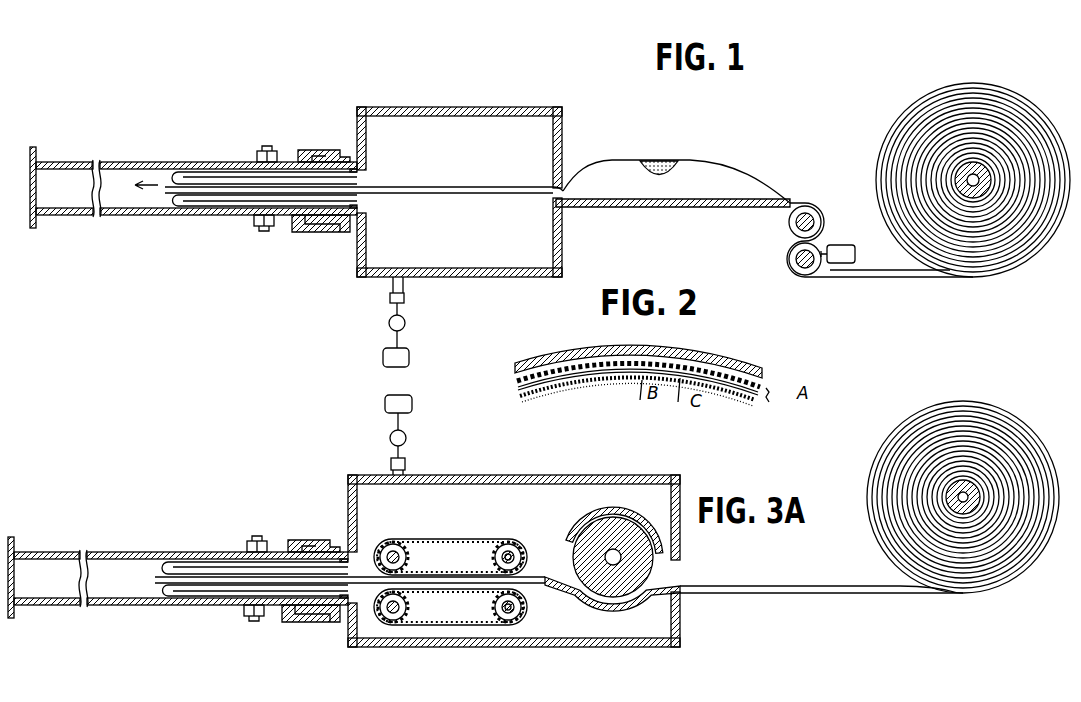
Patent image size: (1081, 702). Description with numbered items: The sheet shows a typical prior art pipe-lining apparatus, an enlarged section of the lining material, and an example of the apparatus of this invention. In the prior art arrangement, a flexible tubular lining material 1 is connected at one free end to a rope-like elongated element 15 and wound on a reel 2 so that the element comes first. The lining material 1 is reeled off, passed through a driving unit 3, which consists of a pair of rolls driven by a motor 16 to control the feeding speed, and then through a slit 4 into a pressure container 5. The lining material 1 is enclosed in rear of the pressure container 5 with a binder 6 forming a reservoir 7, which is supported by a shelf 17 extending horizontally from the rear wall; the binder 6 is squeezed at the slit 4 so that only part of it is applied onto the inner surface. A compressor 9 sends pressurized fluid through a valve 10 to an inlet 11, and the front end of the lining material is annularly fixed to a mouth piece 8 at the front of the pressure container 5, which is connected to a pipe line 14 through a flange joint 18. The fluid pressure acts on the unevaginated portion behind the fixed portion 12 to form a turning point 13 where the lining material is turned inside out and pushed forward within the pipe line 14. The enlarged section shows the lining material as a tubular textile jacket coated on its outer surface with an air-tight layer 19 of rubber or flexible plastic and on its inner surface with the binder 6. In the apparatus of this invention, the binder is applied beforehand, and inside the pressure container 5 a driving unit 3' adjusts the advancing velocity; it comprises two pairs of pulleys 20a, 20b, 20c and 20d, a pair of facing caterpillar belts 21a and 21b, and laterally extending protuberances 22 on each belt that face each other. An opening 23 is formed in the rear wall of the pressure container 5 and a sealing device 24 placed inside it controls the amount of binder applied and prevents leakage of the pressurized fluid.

In FIG. 1, the flexible tubular lining material 1 is at (888, 278).
In FIG. 3A, the flexible tubular lining material 1 is at (808, 595).
In FIG. 1, the reel 2 is at (980, 170).
In FIG. 3A, the reel 2 is at (945, 492).
In FIG. 1, the driving unit 3 is at (806, 216).
In FIG. 3A, the driving unit 3' is at (470, 515).
In FIG. 1, the slit 4 is at (550, 188).
In FIG. 1, the pressure container 5 is at (476, 107).
In FIG. 3A, the pressure container 5 is at (530, 476).
In FIG. 1, the binder 6 is at (659, 158).
In FIG. 2, the binder 6 is at (607, 380).
In FIG. 1, the reservoir 7 is at (617, 170).
In FIG. 1, the mouth piece 8 is at (323, 142).
In FIG. 3A, the mouth piece 8 is at (311, 561).
In FIG. 1, the compressor 9 is at (410, 358).
In FIG. 3A, the compressor 9 is at (412, 405).
In FIG. 1, the valve 10 is at (406, 323).
In FIG. 3A, the valve 10 is at (406, 438).
In FIG. 1, the inlet 11 is at (405, 298).
In FIG. 3A, the inlet 11 is at (405, 464).
In FIG. 1, the fixed portion 12 is at (348, 172).
In FIG. 3A, the fixed portion 12 is at (330, 578).
In FIG. 1, the turning point 13 is at (174, 165).
In FIG. 3A, the turning point 13 is at (254, 556).
In FIG. 1, the pipe line 14 is at (128, 160).
In FIG. 3A, the pipe line 14 is at (178, 567).
In FIG. 1, the rope-like elongated element 15 is at (953, 140).
In FIG. 3A, the rope-like elongated element 15 is at (953, 455).
In FIG. 1, the motor 16 is at (843, 243).
In FIG. 1, the shelf 17 is at (648, 210).
In FIG. 1, the flange joint 18 is at (268, 232).
In FIG. 3A, the flange joint 18 is at (252, 605).
In FIG. 2, the air-tight layer 19 is at (722, 362).
In FIG. 3A, the pulley 20a is at (393, 545).
In FIG. 3A, the pulley 20b is at (508, 545).
In FIG. 3A, the pulley 20c is at (405, 607).
In FIG. 3A, the pulley 20d is at (522, 607).
In FIG. 3A, the caterpillar belt 21a is at (437, 538).
In FIG. 3A, the caterpillar belt 21b is at (470, 626).
In FIG. 3A, the laterally extending protuberances 22 is at (523, 557).
In FIG. 3A, the opening 23 is at (690, 562).
In FIG. 3A, the sealing device 24 is at (563, 519).